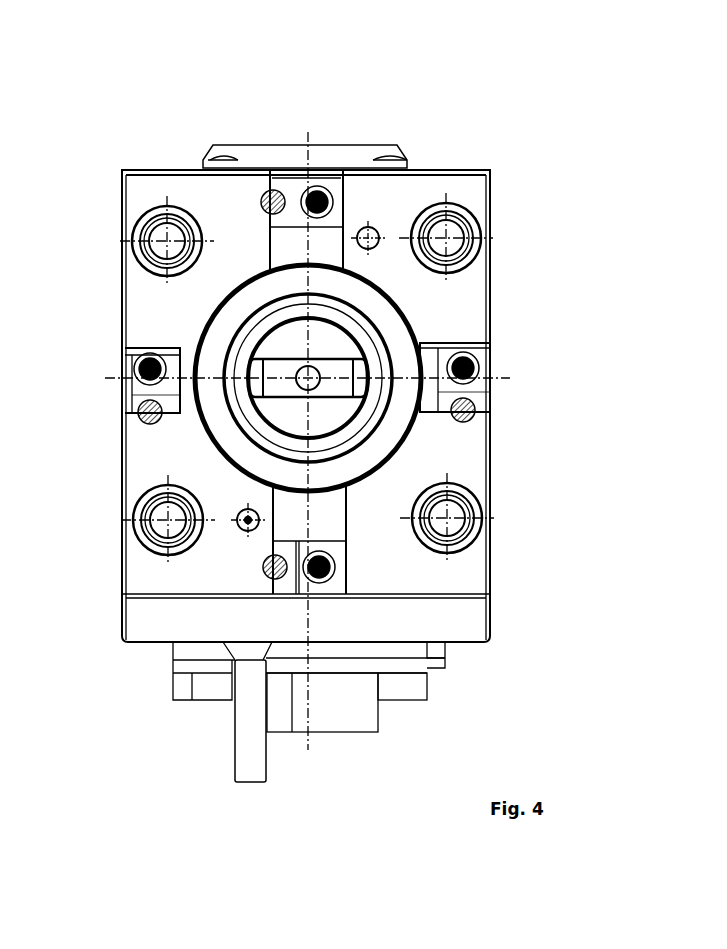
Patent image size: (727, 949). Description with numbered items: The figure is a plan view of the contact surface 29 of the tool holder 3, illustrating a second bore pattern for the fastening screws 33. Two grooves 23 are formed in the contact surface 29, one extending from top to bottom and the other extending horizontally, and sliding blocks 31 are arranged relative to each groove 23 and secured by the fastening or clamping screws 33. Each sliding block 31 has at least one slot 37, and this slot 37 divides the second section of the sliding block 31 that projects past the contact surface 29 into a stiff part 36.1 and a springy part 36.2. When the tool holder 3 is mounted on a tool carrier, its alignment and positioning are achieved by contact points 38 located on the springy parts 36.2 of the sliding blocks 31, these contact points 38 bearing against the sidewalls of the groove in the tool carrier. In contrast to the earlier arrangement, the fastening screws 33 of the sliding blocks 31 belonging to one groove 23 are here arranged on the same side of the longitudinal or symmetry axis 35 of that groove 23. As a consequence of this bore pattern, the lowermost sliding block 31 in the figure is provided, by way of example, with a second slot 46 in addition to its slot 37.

The tool holder 3 is at (503, 60).
The groove 23 is at (280, 250).
The contact surface 29 is at (468, 581).
The sliding block 31 is at (317, 138).
The fastening screw 33 is at (326, 180).
The symmetry axis 35 is at (307, 527).
The stiff part 36.1 is at (285, 188).
The springy part 36.2 is at (345, 175).
The slot 37 is at (312, 172).
The contact point 38 is at (208, 157).
The second slot 46 is at (275, 596).